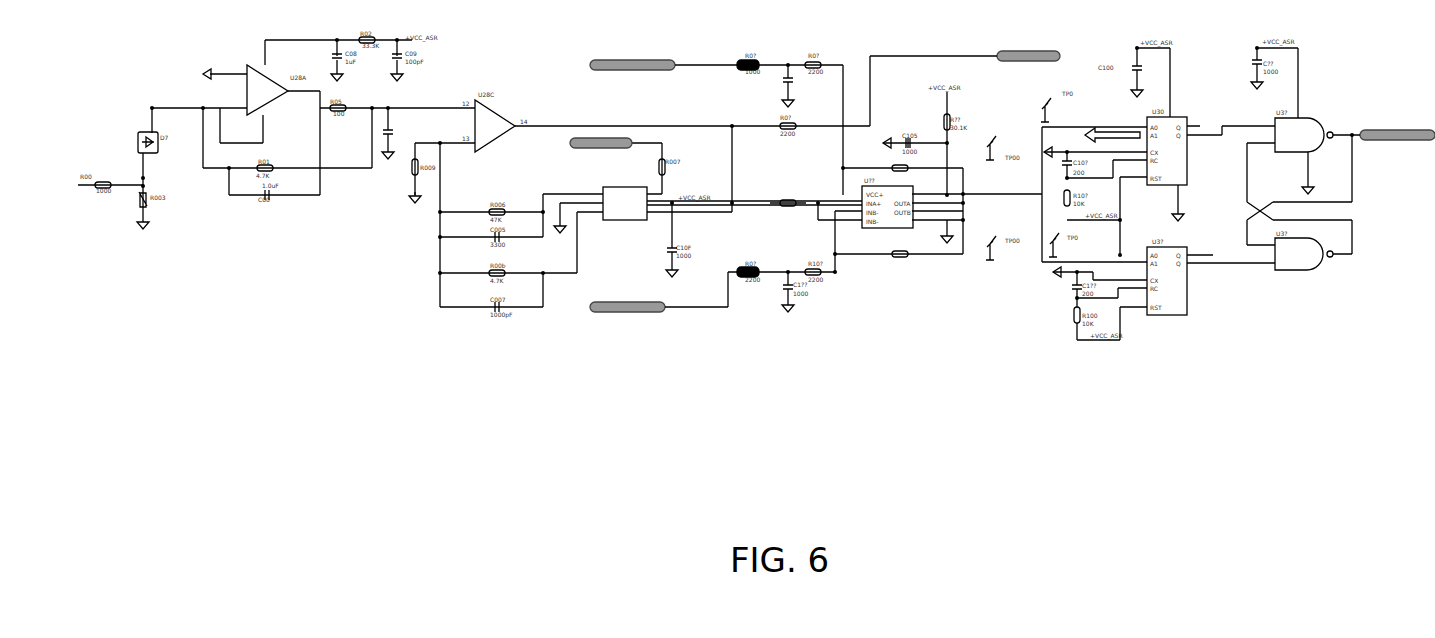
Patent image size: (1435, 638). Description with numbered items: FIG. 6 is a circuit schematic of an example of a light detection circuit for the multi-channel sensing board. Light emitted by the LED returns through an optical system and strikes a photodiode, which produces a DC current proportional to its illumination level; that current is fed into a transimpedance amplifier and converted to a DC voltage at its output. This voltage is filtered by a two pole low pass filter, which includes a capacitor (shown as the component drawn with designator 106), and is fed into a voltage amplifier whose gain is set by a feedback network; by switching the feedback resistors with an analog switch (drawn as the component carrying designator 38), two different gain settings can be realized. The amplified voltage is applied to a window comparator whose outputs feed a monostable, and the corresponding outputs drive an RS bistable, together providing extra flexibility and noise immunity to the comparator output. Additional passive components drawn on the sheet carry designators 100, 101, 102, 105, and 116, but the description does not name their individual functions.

The integrated circuit U38 38 is at (625, 199).
The capacitor C100 100 is at (1144, 72).
The resistor R101 101 is at (903, 168).
The resistor R102 102 is at (788, 203).
The resistor R105 105 is at (899, 254).
The capacitor C106 106 is at (396, 133).
The capacitor C116 116 is at (795, 86).